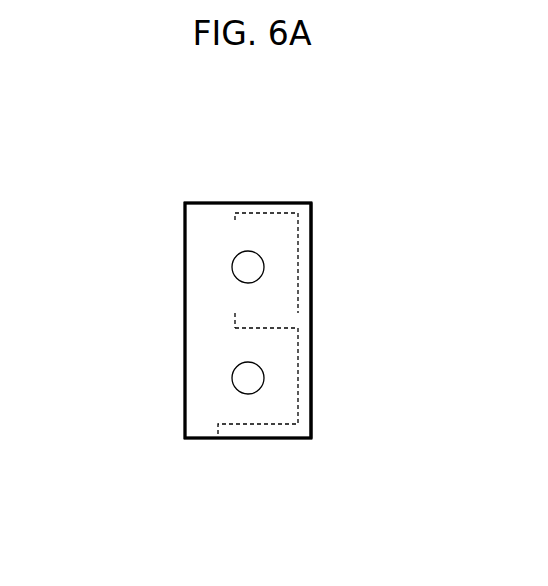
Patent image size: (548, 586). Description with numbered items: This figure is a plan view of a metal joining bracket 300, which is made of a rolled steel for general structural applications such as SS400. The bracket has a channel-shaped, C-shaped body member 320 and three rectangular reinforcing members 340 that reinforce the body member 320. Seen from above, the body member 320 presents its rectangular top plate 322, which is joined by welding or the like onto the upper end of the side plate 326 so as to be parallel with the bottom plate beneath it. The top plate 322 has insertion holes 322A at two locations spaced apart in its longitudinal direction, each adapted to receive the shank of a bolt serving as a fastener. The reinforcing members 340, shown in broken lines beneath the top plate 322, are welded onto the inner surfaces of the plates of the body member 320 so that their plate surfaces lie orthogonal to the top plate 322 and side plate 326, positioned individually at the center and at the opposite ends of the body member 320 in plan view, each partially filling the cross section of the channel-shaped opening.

The metal joining bracket 300 is at (335, 185).
The body member 320 is at (184, 268).
The top plate 322 is at (185, 376).
The insertion holes 322A is at (263, 267).
The side plate 326 is at (303, 355).
The reinforcing members 340 is at (268, 203).